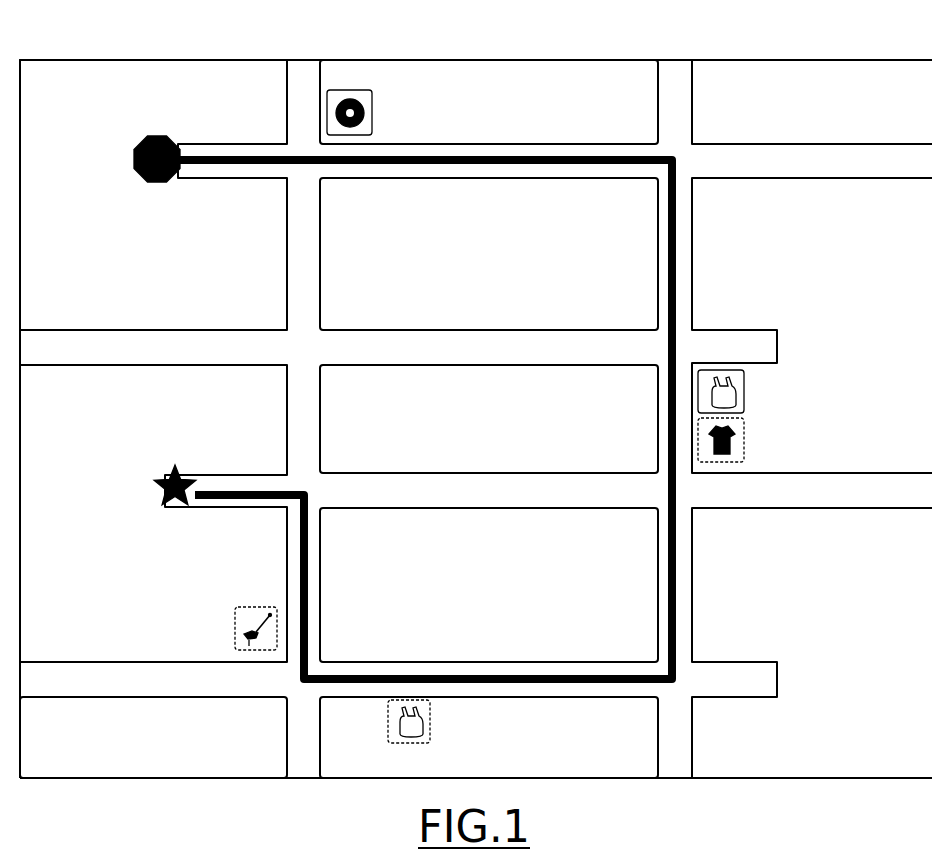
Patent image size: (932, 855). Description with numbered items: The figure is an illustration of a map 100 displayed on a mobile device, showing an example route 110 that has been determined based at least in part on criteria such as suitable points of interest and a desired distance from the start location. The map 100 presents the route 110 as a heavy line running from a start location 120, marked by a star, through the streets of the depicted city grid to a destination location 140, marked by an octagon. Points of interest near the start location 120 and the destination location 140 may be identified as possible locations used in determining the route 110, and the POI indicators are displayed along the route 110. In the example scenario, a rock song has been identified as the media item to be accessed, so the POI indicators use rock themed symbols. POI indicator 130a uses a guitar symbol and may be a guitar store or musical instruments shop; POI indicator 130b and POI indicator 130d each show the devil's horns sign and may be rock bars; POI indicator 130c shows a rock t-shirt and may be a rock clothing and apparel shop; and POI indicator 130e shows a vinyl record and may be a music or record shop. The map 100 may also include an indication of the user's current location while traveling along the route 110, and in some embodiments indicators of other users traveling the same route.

The map 100 is at (842, 52).
The route 110 is at (666, 552).
The start location 120 is at (167, 472).
The POI indicator 130a is at (233, 627).
The POI indicator 130b is at (385, 728).
The POI indicator 130c is at (749, 438).
The POI indicator 130d is at (749, 390).
The POI indicator 130e is at (377, 110).
The destination location 140 is at (186, 149).